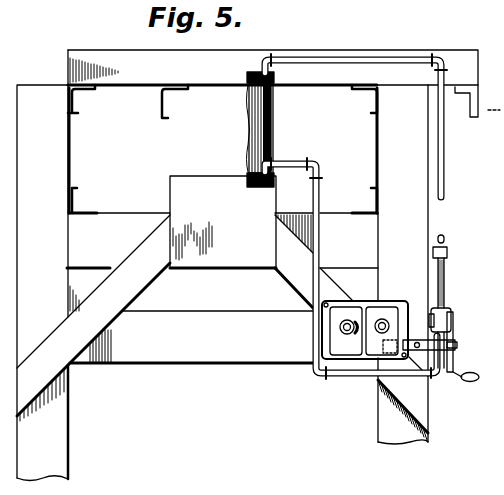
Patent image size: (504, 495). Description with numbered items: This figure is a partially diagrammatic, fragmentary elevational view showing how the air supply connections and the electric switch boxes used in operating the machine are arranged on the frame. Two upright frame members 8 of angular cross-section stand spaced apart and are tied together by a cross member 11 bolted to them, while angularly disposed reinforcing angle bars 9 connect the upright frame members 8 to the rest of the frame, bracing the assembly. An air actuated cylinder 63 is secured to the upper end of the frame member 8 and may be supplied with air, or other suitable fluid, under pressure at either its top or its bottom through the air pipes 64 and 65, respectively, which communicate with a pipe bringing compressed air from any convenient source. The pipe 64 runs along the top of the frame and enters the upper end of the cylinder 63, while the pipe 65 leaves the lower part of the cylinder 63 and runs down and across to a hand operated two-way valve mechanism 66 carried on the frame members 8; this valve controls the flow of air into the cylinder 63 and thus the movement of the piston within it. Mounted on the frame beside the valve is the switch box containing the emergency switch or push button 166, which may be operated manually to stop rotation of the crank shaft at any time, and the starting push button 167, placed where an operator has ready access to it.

The upright frame member 8 is at (57, 445).
The reinforcing angle bar 9 is at (82, 90).
The cross member 11 is at (127, 213).
The air actuated cylinder 63 is at (273, 122).
The air pipe 64 is at (299, 57).
The air pipe 65 is at (291, 160).
The hand operated two-way valve mechanism 66 is at (455, 336).
The emergency switch or push button 166 is at (340, 330).
The starting push button 167 is at (386, 318).